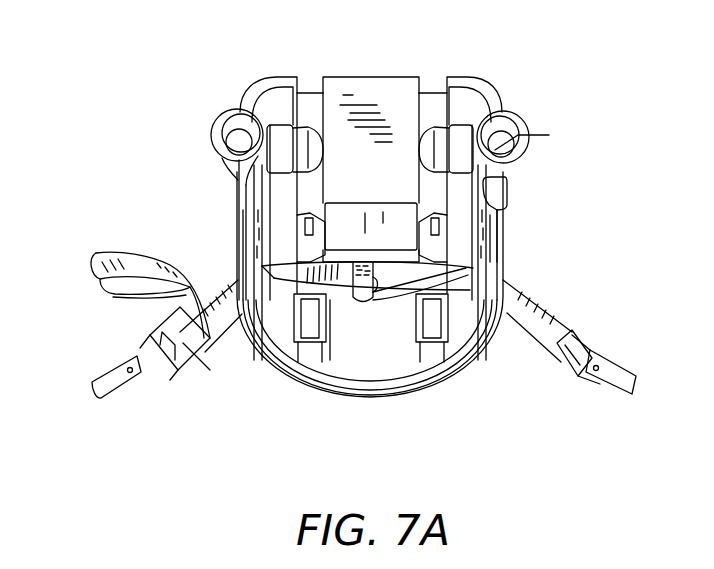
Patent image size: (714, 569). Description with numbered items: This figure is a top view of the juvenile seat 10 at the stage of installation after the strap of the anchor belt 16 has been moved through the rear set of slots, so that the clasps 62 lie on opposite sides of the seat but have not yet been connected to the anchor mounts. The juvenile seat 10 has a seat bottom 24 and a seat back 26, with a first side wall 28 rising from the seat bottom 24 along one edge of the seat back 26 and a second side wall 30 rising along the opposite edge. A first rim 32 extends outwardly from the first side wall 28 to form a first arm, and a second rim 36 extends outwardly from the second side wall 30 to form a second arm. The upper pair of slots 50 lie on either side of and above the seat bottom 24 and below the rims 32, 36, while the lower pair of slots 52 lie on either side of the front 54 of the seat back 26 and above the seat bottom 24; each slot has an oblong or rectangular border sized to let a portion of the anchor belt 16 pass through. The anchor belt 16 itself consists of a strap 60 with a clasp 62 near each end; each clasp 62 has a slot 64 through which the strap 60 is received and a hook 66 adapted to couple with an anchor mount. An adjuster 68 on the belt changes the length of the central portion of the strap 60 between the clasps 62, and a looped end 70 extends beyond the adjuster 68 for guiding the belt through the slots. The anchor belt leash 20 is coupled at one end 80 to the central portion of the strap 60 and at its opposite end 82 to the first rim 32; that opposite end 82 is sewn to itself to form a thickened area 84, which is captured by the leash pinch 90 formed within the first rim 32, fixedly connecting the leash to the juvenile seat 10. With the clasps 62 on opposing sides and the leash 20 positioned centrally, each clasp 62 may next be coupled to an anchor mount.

The juvenile seat 10 is at (399, 428).
The anchor belt 16 is at (360, 240).
The anchor belt leash 20 is at (361, 312).
The seat bottom 24 is at (541, 134).
The seat back 26 is at (400, 353).
The first side wall 28 is at (503, 262).
The second side wall 30 is at (241, 182).
The first rim 32 is at (499, 215).
The second rim 36 is at (249, 215).
The upper pair of slots 50 is at (243, 255).
The lower pair of slots 52 is at (243, 110).
The front of seat back 54 is at (372, 85).
The strap 60 is at (352, 284).
The clasp 62 is at (607, 350).
The slot 64 is at (577, 377).
The hook 66 is at (630, 383).
The adjuster 68 is at (193, 347).
The looped end 70 is at (122, 258).
The one end 80 is at (384, 275).
The opposite end 82 is at (462, 177).
The thickened area 84 is at (503, 190).
The leash pinch 90 is at (502, 240).